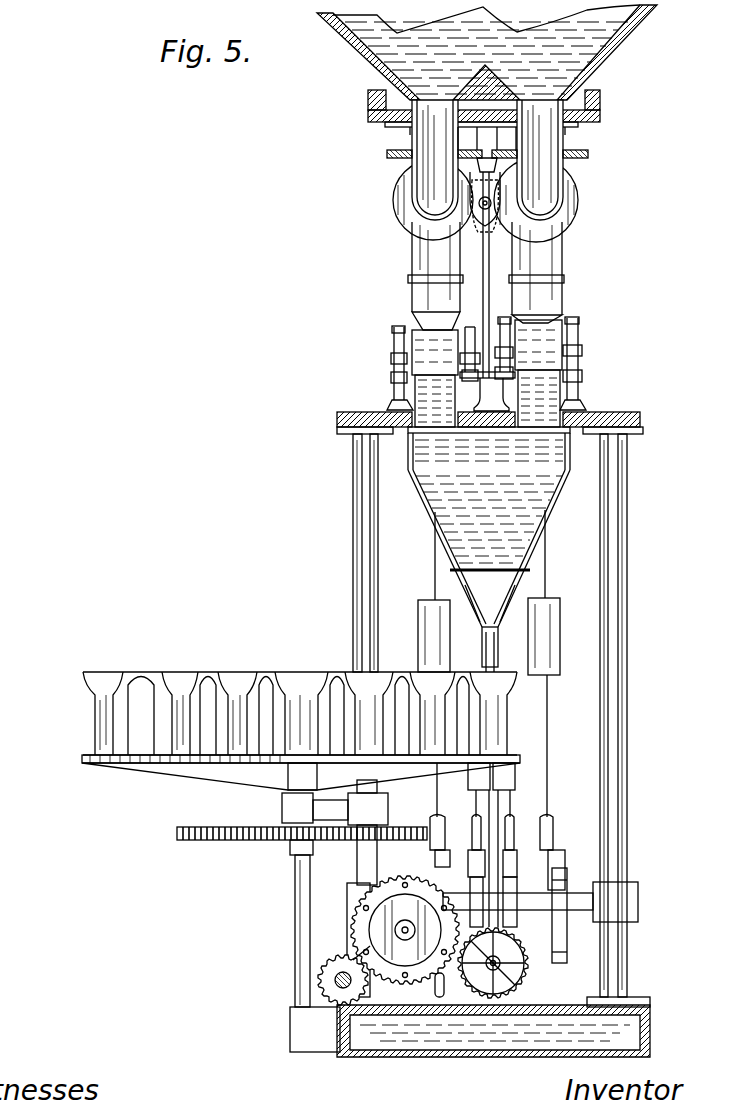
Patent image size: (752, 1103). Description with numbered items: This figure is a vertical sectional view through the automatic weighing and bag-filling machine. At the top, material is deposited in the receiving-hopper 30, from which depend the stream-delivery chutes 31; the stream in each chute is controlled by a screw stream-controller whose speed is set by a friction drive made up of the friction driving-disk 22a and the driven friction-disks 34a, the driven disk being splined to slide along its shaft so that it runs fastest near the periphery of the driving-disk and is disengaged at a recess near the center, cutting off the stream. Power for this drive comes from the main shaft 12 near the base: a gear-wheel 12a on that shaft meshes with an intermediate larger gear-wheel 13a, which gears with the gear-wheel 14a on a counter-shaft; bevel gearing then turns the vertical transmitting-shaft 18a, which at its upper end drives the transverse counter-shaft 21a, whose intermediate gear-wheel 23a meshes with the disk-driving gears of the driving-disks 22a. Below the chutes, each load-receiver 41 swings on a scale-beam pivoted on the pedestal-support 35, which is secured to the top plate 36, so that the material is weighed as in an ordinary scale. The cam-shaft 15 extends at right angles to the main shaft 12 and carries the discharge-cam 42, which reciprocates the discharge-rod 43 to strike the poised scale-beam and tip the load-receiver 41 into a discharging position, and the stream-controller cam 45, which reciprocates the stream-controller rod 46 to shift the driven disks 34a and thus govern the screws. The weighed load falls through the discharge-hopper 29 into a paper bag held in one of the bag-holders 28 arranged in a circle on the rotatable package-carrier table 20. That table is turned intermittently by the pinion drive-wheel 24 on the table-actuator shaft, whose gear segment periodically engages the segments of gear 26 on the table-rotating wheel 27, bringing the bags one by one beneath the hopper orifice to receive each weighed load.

The receiving-hopper 30 is at (487, 70).
The stream-delivery chutes 31 is at (486, 215).
The driven friction-disks 34a is at (398, 153).
The friction driving-disk 22a is at (402, 191).
The intermediate gear-wheel 23a is at (500, 222).
The transverse counter-shaft 21a is at (480, 228).
The vertical transmitting-shaft 18a is at (491, 272).
The load-receiver 41 is at (398, 352).
The pedestal-support 35 is at (583, 374).
The top plate 36 is at (341, 428).
The discharge-hopper 29 is at (489, 547).
The discharge-rod 43 is at (434, 578).
The stream-controller rod 46 is at (498, 646).
The bag-holders 28 is at (298, 674).
The package-carrier table 20 is at (236, 775).
The segments of gear 26 is at (255, 842).
The table-rotating wheel 27 is at (240, 842).
The pinion drive-wheel 24 is at (294, 918).
The intermediate larger gear-wheel 13a is at (432, 876).
The main shaft 12 is at (318, 981).
The gear-wheel 12a is at (356, 958).
The gear-wheel 14a is at (520, 960).
The cam-shaft 15 is at (580, 893).
The discharge-cam 42 is at (440, 856).
The stream-controller cam 45 is at (470, 862).